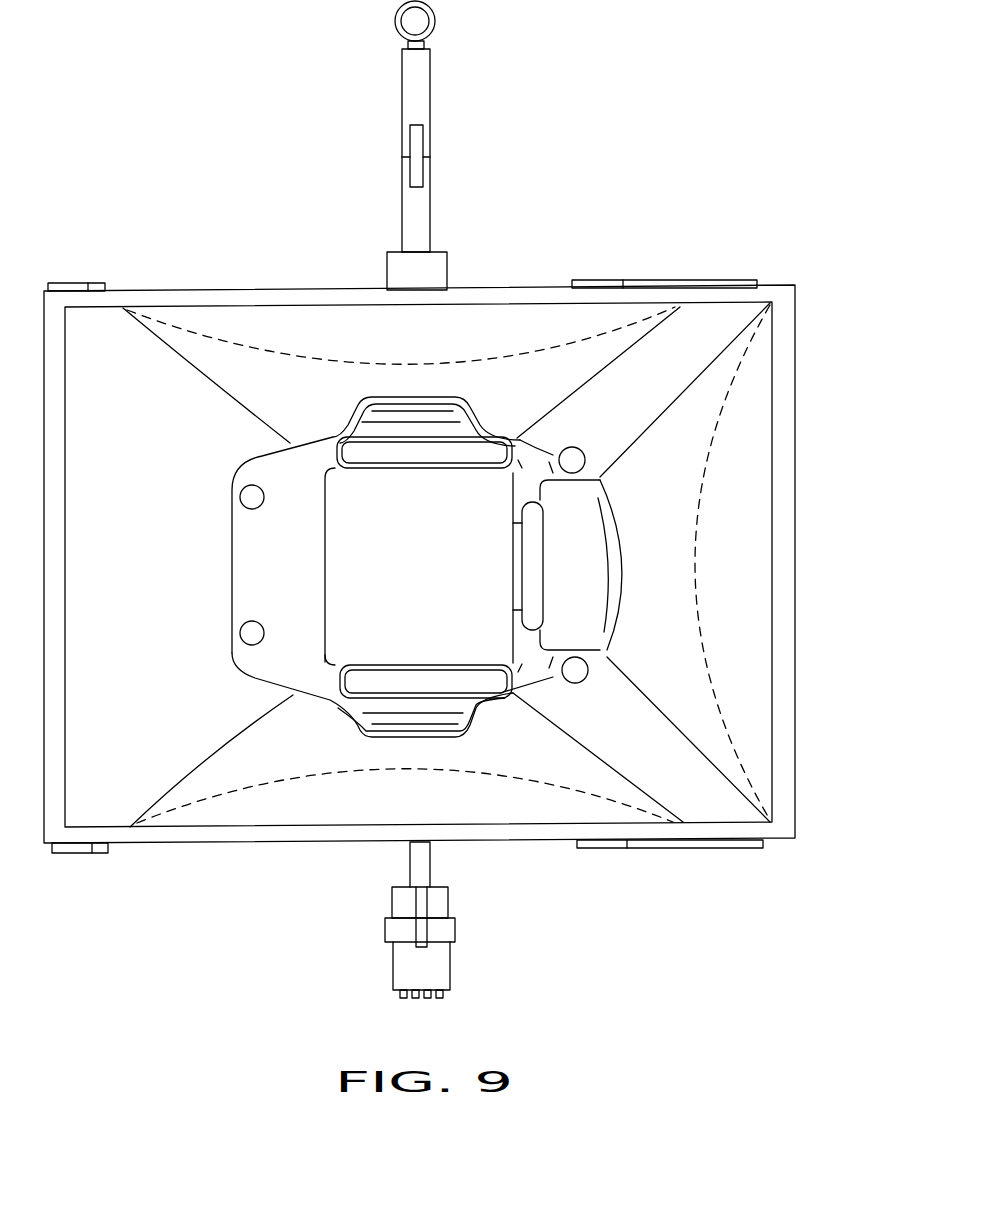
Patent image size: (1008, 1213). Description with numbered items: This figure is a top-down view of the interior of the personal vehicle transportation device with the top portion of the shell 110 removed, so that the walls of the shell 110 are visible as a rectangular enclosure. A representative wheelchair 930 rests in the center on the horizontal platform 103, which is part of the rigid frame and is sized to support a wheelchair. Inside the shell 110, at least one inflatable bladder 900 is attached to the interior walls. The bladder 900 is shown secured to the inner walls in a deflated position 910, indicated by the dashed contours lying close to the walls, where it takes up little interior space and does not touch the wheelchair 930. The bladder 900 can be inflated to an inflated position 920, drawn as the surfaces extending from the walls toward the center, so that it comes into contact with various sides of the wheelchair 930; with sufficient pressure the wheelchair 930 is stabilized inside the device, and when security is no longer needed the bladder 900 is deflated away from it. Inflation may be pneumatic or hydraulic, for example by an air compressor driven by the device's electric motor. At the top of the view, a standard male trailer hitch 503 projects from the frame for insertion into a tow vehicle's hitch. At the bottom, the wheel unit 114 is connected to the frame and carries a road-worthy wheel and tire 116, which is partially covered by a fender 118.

The shell 110 is at (785, 499).
The horizontal platform 103 is at (738, 813).
The male trailer hitch 503 is at (430, 88).
The inflatable bladder 900 is at (510, 330).
The deflated position 910 is at (598, 340).
The inflated position 920 is at (192, 365).
The wheelchair 930 is at (312, 458).
The wheel unit 114 is at (415, 898).
The fender 118 is at (393, 975).
The wheel and tire 116 is at (445, 993).